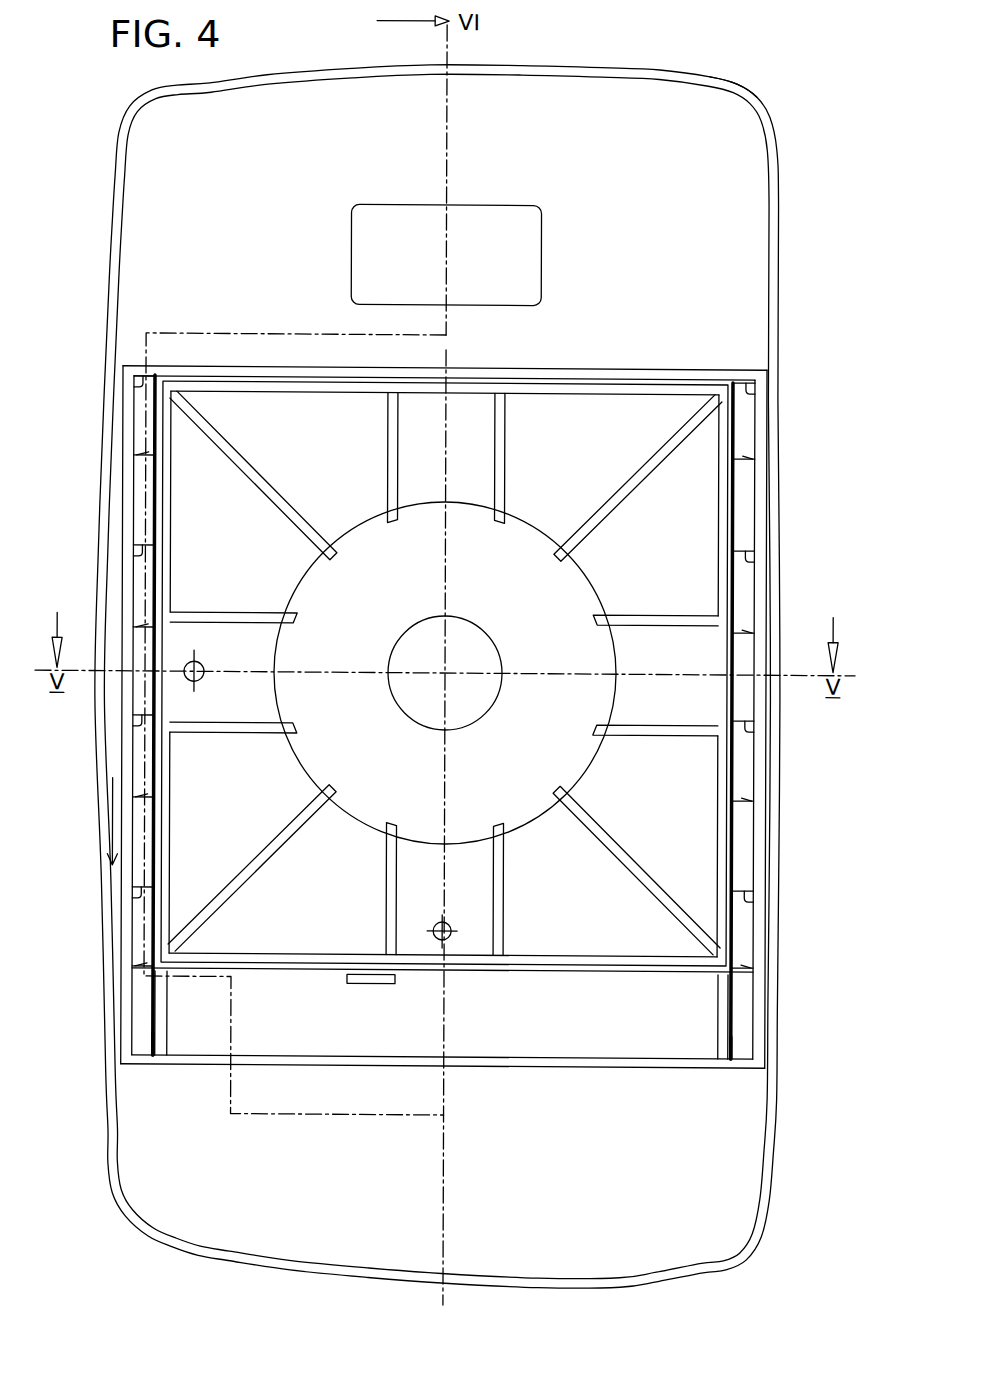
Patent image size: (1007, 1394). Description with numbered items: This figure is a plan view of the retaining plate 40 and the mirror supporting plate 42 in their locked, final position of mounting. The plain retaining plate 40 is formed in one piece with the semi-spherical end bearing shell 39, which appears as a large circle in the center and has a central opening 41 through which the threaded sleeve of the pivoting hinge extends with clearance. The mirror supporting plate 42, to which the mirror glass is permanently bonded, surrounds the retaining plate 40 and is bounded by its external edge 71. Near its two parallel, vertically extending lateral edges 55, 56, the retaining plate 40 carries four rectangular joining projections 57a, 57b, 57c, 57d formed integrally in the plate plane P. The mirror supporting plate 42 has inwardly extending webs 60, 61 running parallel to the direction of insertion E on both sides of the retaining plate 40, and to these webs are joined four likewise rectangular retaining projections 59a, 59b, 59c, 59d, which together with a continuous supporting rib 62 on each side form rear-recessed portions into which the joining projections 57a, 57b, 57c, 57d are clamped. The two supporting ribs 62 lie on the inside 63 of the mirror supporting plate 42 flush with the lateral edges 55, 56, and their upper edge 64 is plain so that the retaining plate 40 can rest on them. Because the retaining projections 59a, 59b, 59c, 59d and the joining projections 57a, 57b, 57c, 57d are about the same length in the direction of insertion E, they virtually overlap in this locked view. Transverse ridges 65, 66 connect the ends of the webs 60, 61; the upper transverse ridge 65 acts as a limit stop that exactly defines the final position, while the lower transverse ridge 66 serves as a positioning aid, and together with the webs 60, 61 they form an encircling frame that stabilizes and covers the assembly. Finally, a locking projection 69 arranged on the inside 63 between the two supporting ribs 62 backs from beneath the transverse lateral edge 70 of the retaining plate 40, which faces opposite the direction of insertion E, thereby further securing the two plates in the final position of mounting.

The end bearing shell 39 is at (573, 593).
The retaining plate 40 is at (590, 938).
The central opening 41 is at (480, 712).
The mirror supporting plate 42 is at (733, 203).
The lateral edge 55 is at (734, 505).
The lateral edge 56 is at (152, 483).
The joining projection 57a is at (141, 393).
The joining projection 57b is at (140, 551).
The joining projection 57c is at (137, 732).
The joining projection 57d is at (140, 900).
The retaining projection 59a is at (141, 425).
The retaining projection 59b is at (141, 572).
The retaining projection 59c is at (137, 763).
The retaining projection 59d is at (141, 938).
The web 60 is at (127, 990).
The web 61 is at (758, 995).
The supporting rib 62 is at (152, 1030).
The inside 63 is at (643, 254).
The upper edge 64 is at (163, 1007).
The transverse ridge 65 is at (595, 374).
The transverse ridge 66 is at (590, 1068).
The locking projection 69 is at (370, 985).
The transverse lateral edge 70 is at (478, 972).
The external edge 71 is at (727, 90).
The direction of insertion E is at (110, 825).
The plate plane P is at (367, 947).